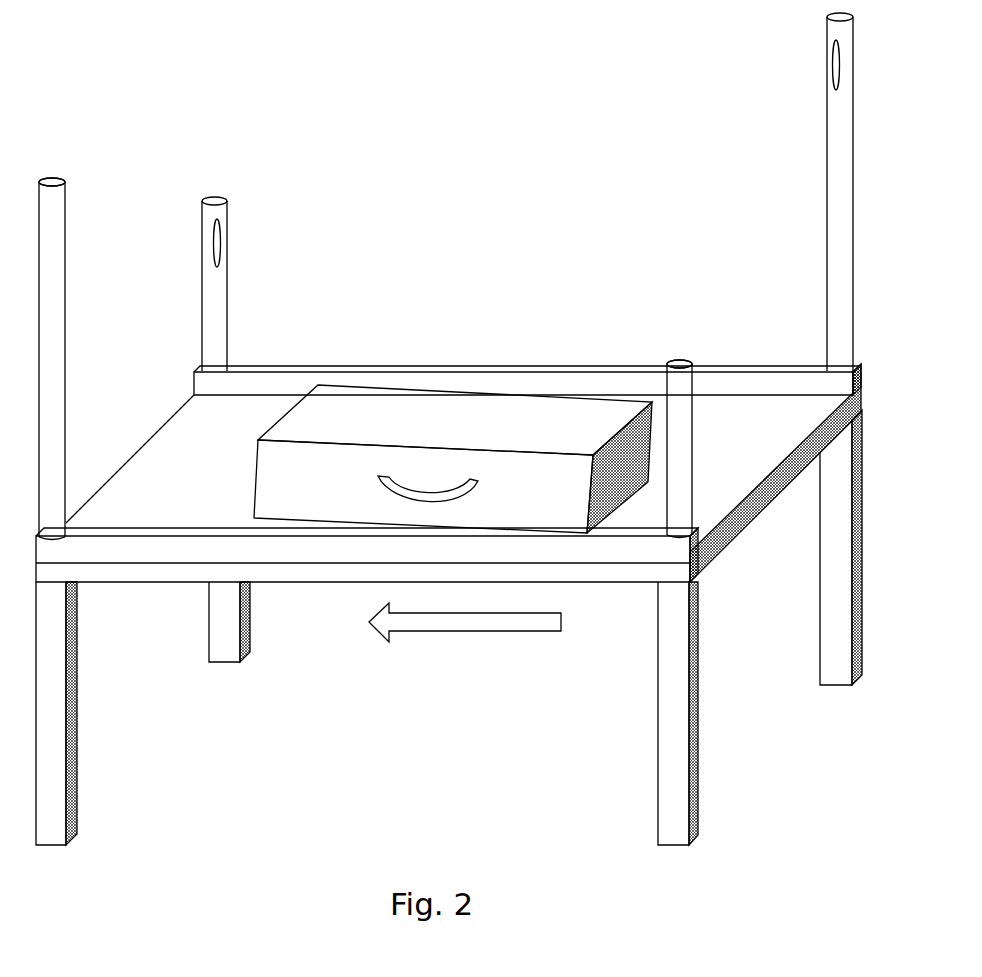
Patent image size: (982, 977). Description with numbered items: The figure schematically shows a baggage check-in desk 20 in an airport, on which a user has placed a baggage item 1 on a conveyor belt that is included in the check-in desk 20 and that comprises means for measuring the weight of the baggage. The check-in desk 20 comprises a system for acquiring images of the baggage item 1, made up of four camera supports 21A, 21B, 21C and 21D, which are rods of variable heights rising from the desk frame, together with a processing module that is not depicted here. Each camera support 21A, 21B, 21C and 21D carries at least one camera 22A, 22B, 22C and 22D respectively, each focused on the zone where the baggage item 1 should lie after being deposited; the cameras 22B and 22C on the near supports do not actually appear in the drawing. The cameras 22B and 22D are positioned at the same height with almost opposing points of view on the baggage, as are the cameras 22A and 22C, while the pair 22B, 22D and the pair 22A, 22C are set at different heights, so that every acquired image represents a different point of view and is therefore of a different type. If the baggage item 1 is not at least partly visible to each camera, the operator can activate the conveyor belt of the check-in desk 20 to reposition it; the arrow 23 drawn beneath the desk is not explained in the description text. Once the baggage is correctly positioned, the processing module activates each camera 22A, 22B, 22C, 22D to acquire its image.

The baggage item 1 is at (258, 449).
The baggage check-in desk 20 is at (724, 553).
The camera support 21A is at (228, 306).
The camera support 21B is at (66, 366).
The camera support 21C is at (693, 455).
The camera support 21D is at (828, 214).
The camera 22A is at (228, 243).
The camera 22B is at (66, 231).
The camera 22C is at (693, 421).
The camera 22D is at (828, 75).
The insertion direction arrow 23 is at (562, 629).